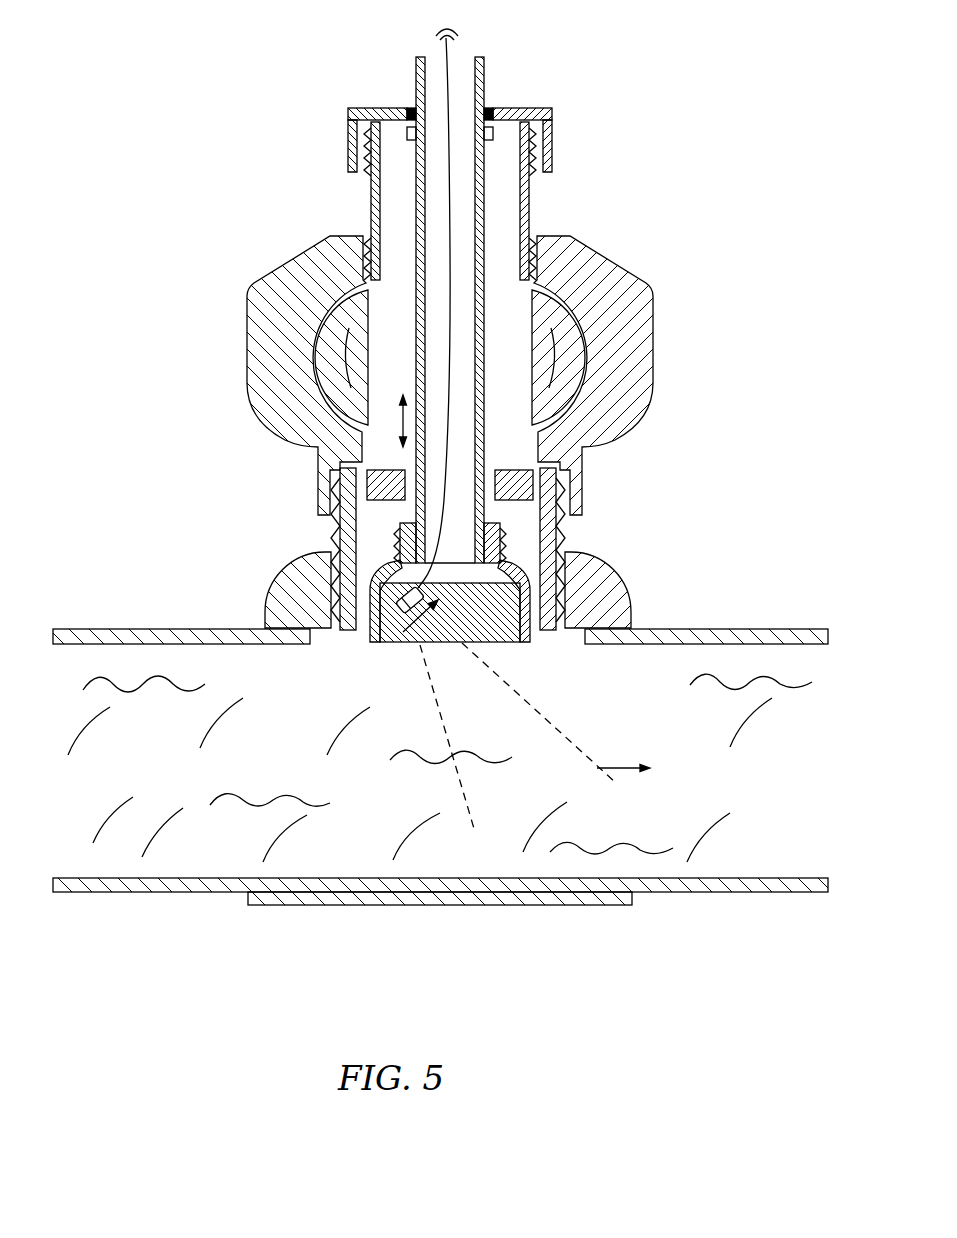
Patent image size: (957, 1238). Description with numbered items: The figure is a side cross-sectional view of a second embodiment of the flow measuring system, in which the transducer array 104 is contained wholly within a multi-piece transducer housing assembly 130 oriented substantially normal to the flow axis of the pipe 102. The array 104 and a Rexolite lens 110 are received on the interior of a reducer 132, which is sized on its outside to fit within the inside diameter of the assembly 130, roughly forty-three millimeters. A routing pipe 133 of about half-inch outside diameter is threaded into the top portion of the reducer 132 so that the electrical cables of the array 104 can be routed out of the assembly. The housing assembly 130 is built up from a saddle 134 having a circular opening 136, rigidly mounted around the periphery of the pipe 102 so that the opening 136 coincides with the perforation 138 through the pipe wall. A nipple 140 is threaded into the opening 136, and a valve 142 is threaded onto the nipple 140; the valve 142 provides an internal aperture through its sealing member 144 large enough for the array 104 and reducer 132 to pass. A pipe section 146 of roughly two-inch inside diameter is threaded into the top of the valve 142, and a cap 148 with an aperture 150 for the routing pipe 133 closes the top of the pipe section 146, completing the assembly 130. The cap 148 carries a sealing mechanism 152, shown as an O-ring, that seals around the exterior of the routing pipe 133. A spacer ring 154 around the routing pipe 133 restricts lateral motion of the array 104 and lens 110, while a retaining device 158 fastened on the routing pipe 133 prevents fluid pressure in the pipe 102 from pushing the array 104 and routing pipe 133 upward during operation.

The pipe 102 is at (690, 630).
The transducer array 104 is at (510, 661).
The Rexolite lens 110 is at (392, 643).
The transducer housing assembly 130 is at (461, 315).
The reducer 132 is at (552, 545).
The routing pipe 133 is at (485, 198).
The saddle 134 is at (300, 590).
The opening 136 is at (337, 660).
The perforation 138 is at (563, 656).
The nipple 140 is at (337, 530).
The valve 142 is at (620, 288).
The sealing member 144 is at (350, 330).
The pipe section 146 is at (372, 192).
The cap 148 is at (523, 110).
The aperture 150 is at (457, 140).
The sealing mechanism 152 is at (485, 108).
The spacer ring 154 is at (376, 485).
The retaining device 158 is at (495, 136).